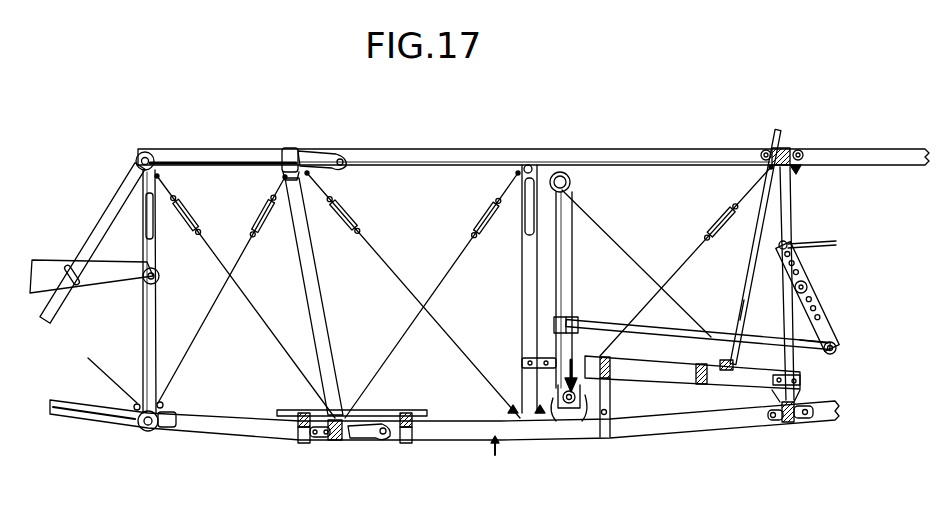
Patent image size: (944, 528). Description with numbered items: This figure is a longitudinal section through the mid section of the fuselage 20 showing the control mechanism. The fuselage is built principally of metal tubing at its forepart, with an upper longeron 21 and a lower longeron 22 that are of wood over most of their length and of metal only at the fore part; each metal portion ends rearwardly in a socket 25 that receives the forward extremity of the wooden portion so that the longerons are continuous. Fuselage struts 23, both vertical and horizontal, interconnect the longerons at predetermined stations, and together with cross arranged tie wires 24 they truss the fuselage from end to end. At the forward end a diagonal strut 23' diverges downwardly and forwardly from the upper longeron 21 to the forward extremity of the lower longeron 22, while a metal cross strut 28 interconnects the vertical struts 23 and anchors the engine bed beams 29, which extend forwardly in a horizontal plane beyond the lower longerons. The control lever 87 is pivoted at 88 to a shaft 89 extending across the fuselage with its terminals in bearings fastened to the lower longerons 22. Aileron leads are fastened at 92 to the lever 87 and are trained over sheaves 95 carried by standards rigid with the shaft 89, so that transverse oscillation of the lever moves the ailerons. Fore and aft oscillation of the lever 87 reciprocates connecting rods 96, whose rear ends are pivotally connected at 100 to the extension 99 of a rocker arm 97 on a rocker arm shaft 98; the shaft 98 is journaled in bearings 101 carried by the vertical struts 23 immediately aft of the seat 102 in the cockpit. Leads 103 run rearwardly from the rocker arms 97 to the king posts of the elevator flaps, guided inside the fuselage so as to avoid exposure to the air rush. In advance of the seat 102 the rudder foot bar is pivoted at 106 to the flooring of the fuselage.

The fuselage forepart 20 is at (505, 459).
The upper longeron 21 is at (222, 154).
The lower longeron 22 is at (82, 417).
The fuselage strut 23 is at (455, 291).
The diagonal strut 23' is at (92, 240).
The tie wire 24 is at (434, 291).
The socket 25 is at (335, 153).
The metal cross strut 28 is at (157, 281).
The engine bed beam 29 is at (91, 262).
The control lever 87 is at (553, 248).
The pivot 88 is at (600, 437).
The shaft 89 is at (563, 412).
The lead fastening 92 is at (556, 322).
The sheave 95 is at (577, 388).
The connecting rod 96 is at (640, 325).
The rocker arm 97 is at (799, 267).
The rocker arm shaft 98 is at (795, 289).
The rocker arm extension 99 is at (827, 340).
The pivotal connection 100 is at (828, 355).
The bearing 101 is at (741, 307).
The seat 102 is at (758, 198).
The lead 103 is at (815, 244).
The foot bar pivot 106 is at (372, 410).